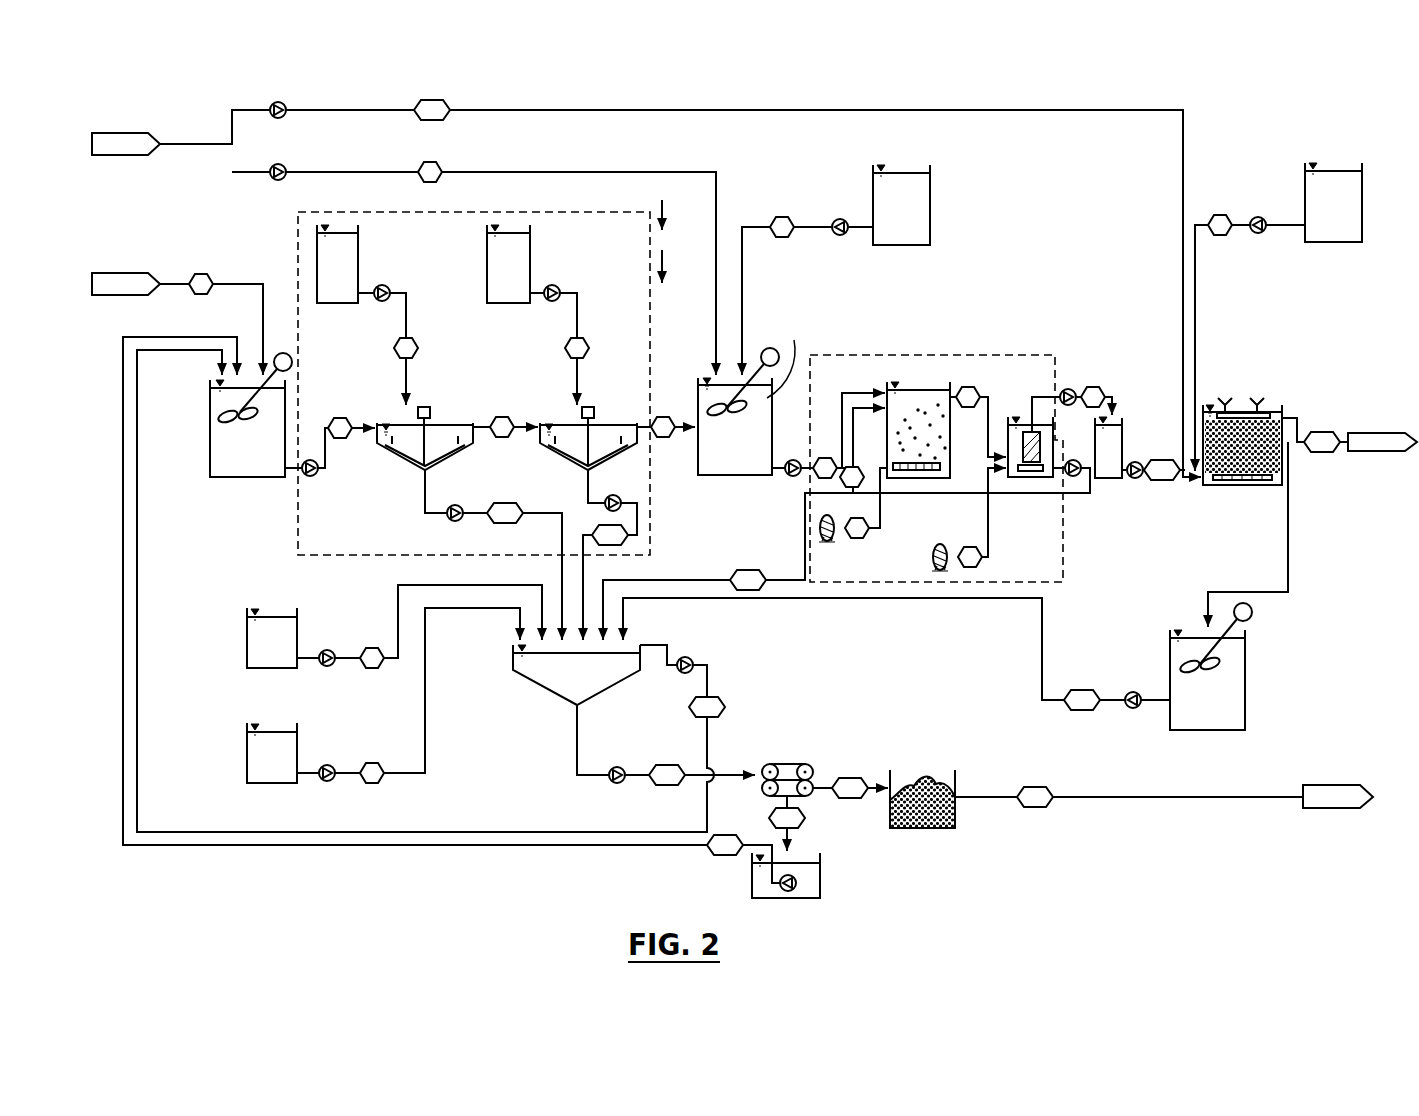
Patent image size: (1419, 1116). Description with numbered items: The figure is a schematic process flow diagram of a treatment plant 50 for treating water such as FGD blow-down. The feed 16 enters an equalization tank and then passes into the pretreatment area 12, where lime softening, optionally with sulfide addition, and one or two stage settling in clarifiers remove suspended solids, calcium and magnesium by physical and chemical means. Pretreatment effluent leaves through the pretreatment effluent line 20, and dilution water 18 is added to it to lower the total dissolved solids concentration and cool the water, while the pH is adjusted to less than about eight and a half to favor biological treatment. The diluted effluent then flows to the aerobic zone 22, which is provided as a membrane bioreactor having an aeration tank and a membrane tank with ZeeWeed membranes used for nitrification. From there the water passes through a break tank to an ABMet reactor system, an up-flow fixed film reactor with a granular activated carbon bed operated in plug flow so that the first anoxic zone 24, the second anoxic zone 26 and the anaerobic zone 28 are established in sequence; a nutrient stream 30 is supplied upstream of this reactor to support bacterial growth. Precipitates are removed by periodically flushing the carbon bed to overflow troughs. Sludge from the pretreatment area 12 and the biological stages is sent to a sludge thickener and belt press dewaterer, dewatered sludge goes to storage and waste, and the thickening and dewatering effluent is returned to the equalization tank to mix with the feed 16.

The pretreatment area 12 is at (438, 259).
The feed 16 is at (227, 283).
The dilution water 18 is at (716, 170).
The pretreatment effluent line 20 is at (746, 448).
The aerobic zone 22 is at (938, 384).
The first anoxic zone 24 is at (1285, 465).
The second anoxic zone 26 is at (1277, 447).
The anaerobic zone 28 is at (1282, 435).
The nutrient stream 30 is at (1195, 290).
The treatment plant 50 is at (253, 888).